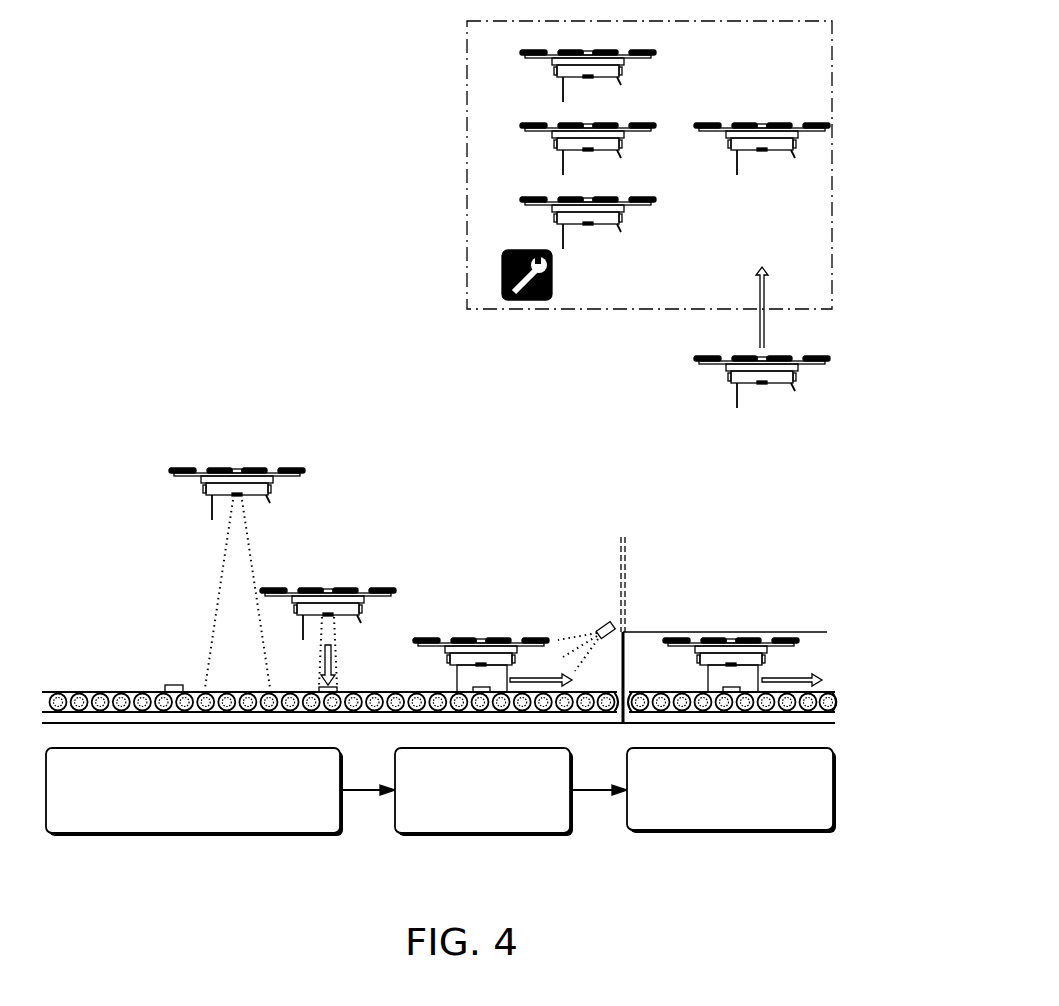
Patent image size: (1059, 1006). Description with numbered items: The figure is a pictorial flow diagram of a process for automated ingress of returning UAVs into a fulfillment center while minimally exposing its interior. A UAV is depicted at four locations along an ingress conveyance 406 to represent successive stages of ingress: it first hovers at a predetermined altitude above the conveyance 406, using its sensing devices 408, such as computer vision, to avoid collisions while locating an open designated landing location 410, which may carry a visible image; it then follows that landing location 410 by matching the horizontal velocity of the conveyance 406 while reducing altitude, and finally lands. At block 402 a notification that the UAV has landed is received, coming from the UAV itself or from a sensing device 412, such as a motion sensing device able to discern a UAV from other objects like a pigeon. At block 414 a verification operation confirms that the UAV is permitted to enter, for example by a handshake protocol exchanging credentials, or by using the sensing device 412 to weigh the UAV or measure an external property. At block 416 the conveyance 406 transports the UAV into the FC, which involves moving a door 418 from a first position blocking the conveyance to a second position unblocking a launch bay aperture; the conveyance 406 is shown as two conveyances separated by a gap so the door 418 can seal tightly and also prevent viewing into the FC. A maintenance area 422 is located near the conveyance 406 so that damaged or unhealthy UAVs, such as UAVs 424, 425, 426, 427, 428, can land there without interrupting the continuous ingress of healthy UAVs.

The block 402 is at (194, 792).
The ingress conveyance 406 is at (122, 690).
The sensing device 408 is at (237, 497).
The designated landing location 410 is at (175, 685).
The sensing device 412 is at (598, 624).
The block 414 is at (484, 792).
The block 416 is at (731, 790).
The door 418 is at (626, 560).
The maintenance area 422 is at (465, 150).
The unhealthy UAV 424 is at (730, 383).
The unhealthy UAV 425 is at (588, 226).
The unhealthy UAV 426 is at (588, 153).
The unhealthy UAV 427 is at (588, 80).
The unhealthy UAV 428 is at (762, 153).